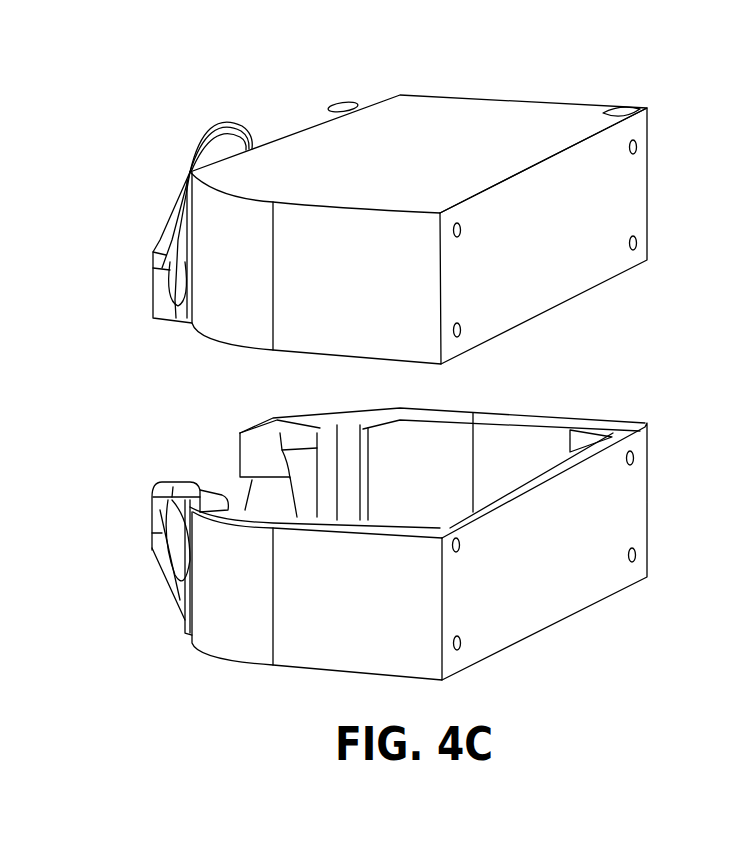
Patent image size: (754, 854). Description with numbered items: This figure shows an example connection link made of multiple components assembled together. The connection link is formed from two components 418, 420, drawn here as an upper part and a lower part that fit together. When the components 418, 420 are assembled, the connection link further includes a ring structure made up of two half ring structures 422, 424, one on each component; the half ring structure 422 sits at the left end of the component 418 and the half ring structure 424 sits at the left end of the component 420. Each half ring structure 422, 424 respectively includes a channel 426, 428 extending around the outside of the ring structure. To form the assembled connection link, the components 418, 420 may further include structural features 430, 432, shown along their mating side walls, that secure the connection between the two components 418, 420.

The component 418 is at (492, 103).
The component 420 is at (643, 497).
The half ring structure 422 is at (207, 132).
The half ring structure 424 is at (170, 480).
The channel 426 is at (168, 243).
The channel 428 is at (177, 543).
The structural feature 430 is at (633, 265).
The structural feature 432 is at (617, 423).